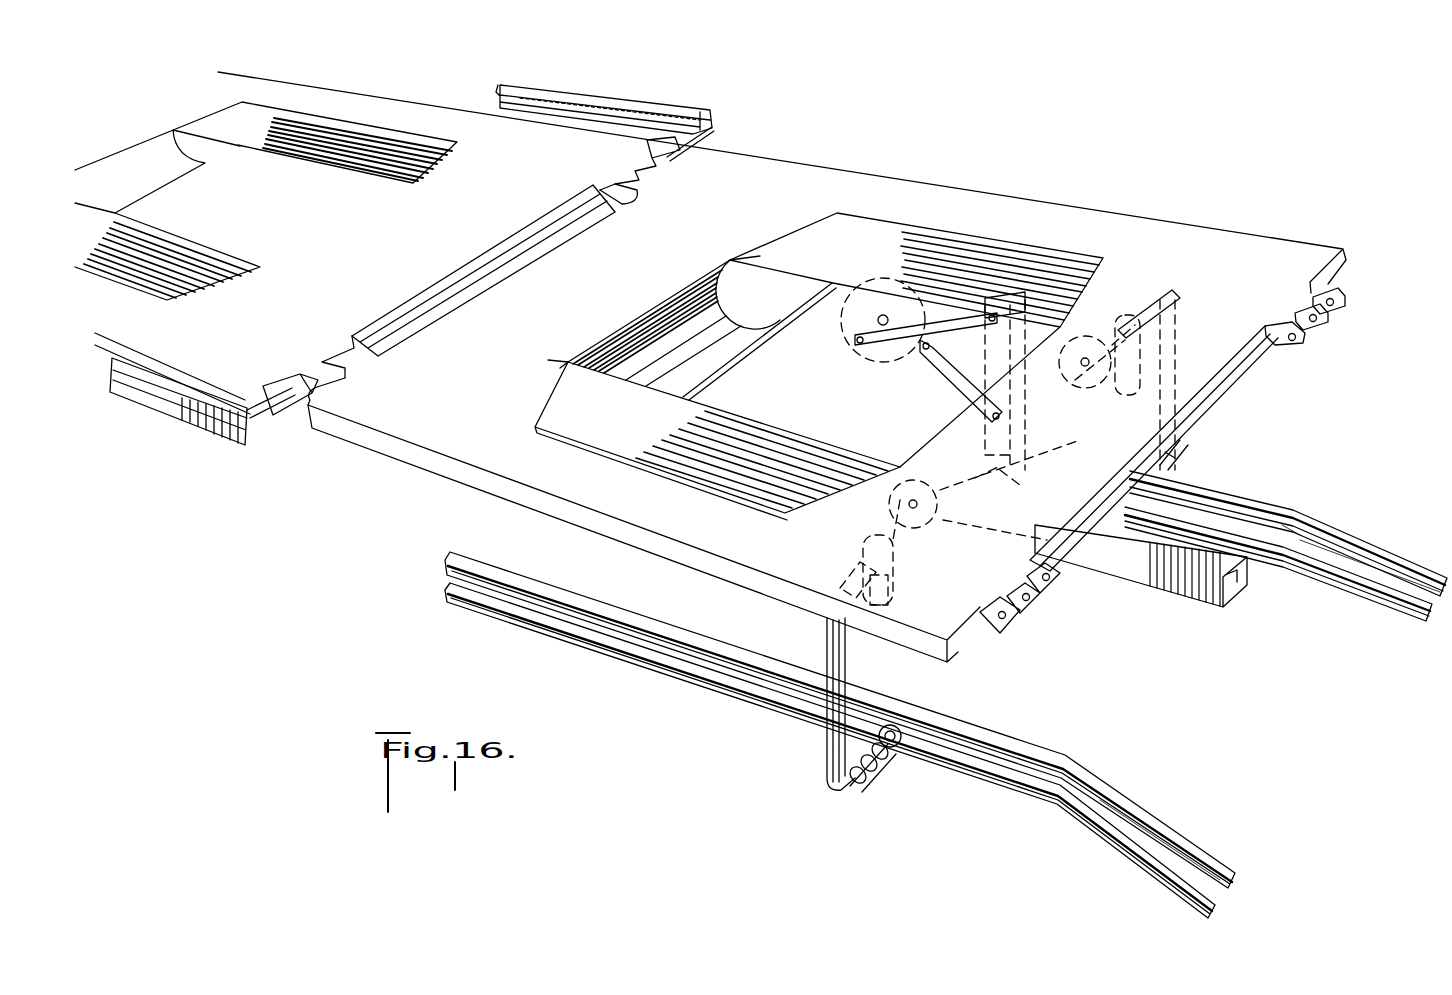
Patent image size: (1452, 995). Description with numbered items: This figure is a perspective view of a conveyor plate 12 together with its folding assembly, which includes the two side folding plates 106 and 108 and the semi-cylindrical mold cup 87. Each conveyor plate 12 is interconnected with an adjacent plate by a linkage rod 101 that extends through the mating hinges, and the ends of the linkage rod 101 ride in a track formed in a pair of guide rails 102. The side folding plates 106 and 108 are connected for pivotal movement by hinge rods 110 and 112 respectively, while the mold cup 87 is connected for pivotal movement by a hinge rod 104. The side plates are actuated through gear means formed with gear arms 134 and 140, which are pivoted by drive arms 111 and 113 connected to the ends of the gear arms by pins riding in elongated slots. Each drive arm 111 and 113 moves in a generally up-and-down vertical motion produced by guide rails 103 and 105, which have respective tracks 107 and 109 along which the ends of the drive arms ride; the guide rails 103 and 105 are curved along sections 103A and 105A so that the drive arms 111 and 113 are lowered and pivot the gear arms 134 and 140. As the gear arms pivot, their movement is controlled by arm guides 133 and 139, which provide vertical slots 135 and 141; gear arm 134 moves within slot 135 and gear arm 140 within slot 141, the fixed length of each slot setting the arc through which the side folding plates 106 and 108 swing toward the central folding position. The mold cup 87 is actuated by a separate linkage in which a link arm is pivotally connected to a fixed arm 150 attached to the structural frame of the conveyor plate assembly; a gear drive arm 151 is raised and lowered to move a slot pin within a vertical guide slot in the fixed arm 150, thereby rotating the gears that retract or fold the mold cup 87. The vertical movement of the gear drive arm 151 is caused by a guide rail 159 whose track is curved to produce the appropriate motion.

The conveyor plate 12 is at (352, 244).
The mold cup 87 is at (668, 308).
The linkage rod 101 is at (283, 420).
The guide rails 102 is at (190, 412).
The guide rail 103 is at (1020, 745).
The curved section 103A is at (1170, 840).
The hinge rod 104 is at (763, 340).
The guide rail 105 is at (1232, 492).
The curved section 105A is at (1412, 532).
The side folding plate 106 is at (968, 250).
The track 107 is at (1030, 784).
The side folding plate 108 is at (547, 436).
The track 109 is at (1298, 538).
The hinge rod 110 is at (748, 260).
The drive arm 111 is at (828, 757).
The hinge rod 112 is at (547, 362).
The drive arm 113 is at (1180, 325).
The arm guide 133 is at (896, 573).
The gear arm 134 is at (852, 570).
The vertical slot 135 is at (892, 598).
The arm guide 139 is at (1127, 315).
The gear arm 140 is at (1160, 298).
The elongated slot 141 is at (1100, 392).
The fixed arm 150 is at (1033, 437).
The gear drive arm 151 is at (1035, 470).
The guide rail 159 is at (1190, 588).